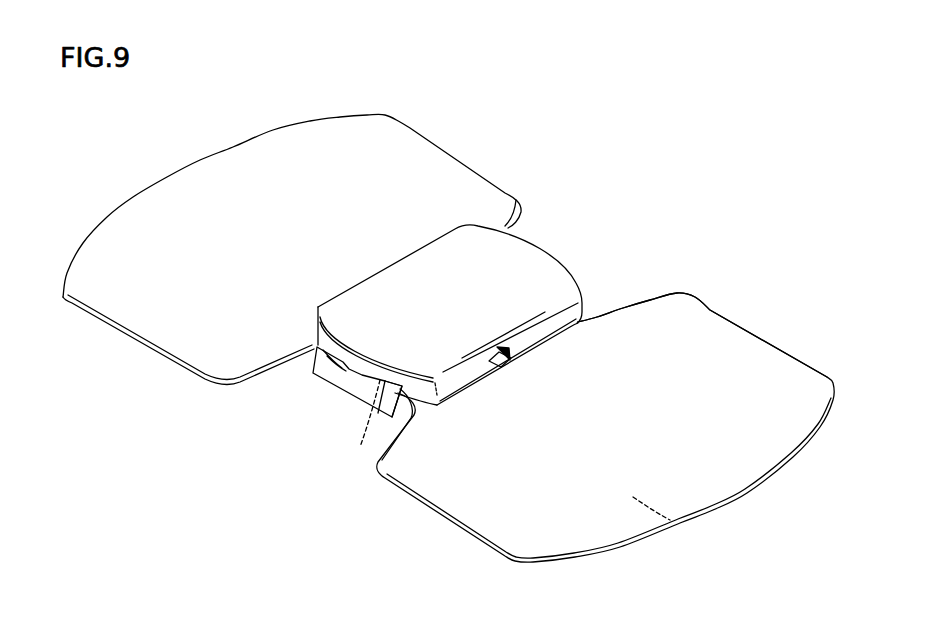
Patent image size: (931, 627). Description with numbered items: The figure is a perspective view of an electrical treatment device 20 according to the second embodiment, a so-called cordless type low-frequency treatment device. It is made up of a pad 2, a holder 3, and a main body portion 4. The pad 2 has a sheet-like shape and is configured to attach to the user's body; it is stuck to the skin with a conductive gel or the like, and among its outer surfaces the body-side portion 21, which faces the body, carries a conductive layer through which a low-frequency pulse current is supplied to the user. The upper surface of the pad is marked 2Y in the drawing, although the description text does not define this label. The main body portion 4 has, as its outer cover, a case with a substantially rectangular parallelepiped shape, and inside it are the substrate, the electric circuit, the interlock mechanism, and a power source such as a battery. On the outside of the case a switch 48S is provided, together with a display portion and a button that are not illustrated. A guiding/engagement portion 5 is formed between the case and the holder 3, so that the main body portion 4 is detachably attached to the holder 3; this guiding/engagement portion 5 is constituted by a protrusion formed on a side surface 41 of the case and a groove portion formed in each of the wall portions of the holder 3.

The electrical treatment device 20 is at (553, 137).
The pad 2 is at (694, 296).
The pad main surface 2Y is at (214, 175).
The body-side portion 21 is at (685, 522).
The main body portion 4 is at (549, 247).
The switch 48S is at (513, 365).
The holder 3 is at (330, 373).
The guiding/engagement portion 5 is at (347, 370).
The side surface 41 is at (390, 380).